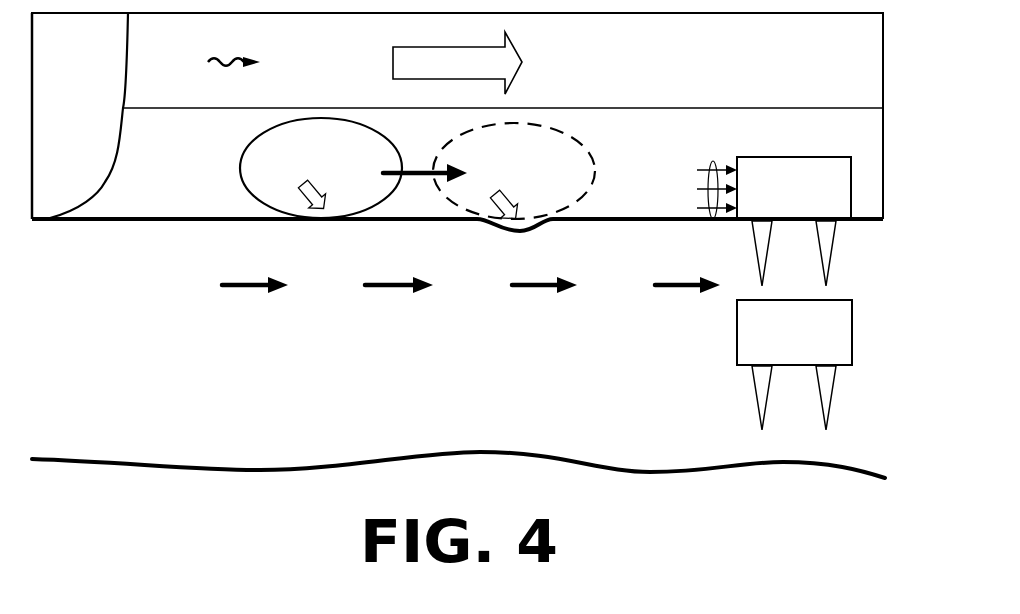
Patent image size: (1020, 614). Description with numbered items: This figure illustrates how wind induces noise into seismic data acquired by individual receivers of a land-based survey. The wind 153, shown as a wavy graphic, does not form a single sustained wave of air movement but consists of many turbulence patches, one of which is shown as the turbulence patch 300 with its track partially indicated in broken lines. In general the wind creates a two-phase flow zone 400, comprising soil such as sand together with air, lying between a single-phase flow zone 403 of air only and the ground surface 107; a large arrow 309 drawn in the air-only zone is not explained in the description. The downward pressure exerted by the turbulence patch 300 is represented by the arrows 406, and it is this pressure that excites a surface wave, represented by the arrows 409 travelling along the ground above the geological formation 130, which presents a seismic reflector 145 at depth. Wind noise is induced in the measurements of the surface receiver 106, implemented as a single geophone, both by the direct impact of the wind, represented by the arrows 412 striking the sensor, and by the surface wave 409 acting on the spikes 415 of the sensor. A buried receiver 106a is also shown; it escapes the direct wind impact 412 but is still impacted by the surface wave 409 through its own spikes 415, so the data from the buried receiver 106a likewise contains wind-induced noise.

The ground surface 107 is at (207, 223).
The single-phase flow zone 403 is at (503, 79).
The two-phase flow zone 400 is at (650, 134).
The wind 153 is at (209, 61).
The flow direction 309 is at (383, 62).
The turbulence patch 300 is at (417, 168).
The arrows 406 is at (308, 212).
The geological formation 130 is at (399, 311).
The surface wave 409 is at (673, 288).
The arrows 412 is at (702, 221).
The receiver 106 is at (794, 188).
The buried receiver 106a is at (794, 332).
The spikes 415 is at (754, 230).
The seismic reflector 145 is at (60, 457).